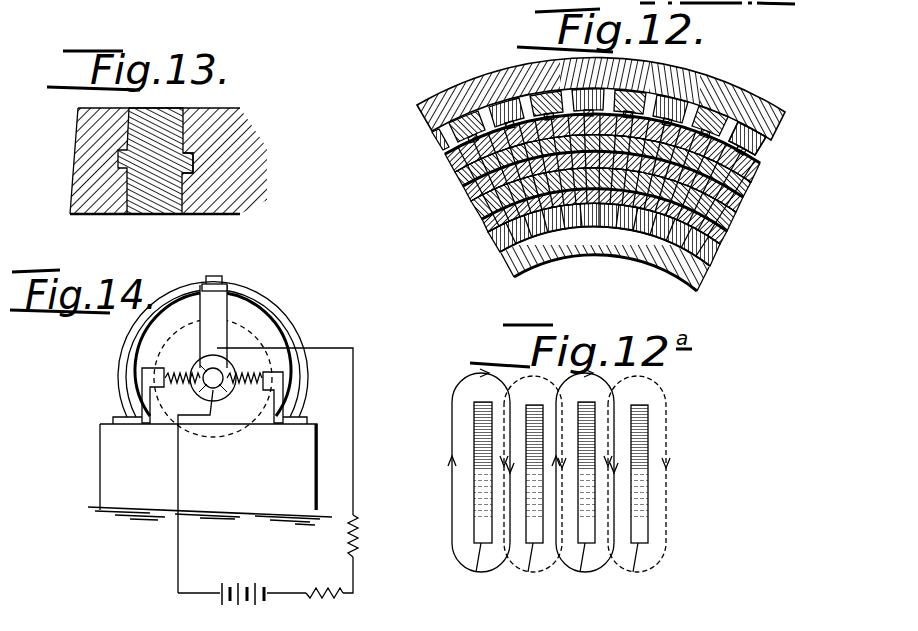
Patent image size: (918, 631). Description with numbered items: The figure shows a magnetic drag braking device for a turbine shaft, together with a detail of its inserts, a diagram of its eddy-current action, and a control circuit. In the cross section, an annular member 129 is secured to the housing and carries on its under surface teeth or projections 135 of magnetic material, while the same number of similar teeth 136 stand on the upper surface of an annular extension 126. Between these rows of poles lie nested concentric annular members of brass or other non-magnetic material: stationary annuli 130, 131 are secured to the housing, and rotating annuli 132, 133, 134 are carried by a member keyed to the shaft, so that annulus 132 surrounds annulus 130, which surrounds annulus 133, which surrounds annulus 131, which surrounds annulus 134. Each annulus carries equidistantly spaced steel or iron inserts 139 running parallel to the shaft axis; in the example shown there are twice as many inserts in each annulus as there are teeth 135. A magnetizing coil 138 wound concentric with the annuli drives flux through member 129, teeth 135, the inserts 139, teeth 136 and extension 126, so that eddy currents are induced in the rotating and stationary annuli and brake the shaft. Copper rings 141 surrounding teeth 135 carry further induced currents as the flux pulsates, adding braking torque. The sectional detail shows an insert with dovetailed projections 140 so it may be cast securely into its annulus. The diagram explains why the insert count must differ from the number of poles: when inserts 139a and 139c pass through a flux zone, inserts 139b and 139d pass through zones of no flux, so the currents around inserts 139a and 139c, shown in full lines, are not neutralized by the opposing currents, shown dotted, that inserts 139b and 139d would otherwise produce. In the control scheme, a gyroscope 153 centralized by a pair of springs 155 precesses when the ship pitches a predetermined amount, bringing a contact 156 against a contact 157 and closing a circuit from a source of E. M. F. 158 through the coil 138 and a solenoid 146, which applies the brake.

In FIG. 12, the annular extension 126 is at (530, 270).
In FIG. 12, the annular member 129 is at (479, 86).
In FIG. 12, the concentric annular member 130 is at (463, 184).
In FIG. 13, the concentric annular member 130 is at (157, 161).
In FIG. 12, the concentric annular member 131 is at (480, 219).
In FIG. 12, the annular member 132 is at (455, 160).
In FIG. 12, the annular member 133 is at (470, 200).
In FIG. 12, the annular member 134 is at (490, 229).
In FIG. 12, the teeth or projections 135 is at (748, 156).
In FIG. 12, the teeth 136 is at (494, 247).
In FIG. 12, the steel or iron inserts 139 is at (726, 226).
In FIG. 13, the steel or iron inserts 139 is at (157, 214).
In FIG. 12A, the insert 139a is at (502, 595).
In FIG. 12A, the insert 139b is at (562, 595).
In FIG. 12A, the insert 139c is at (616, 595).
In FIG. 12A, the insert 139d is at (677, 595).
In FIG. 13, the dovetailed projections 140 is at (185, 172).
In FIG. 12, the copper rings 141 is at (447, 138).
In FIG. 14, the gyroscope 153 is at (253, 327).
In FIG. 14, the springs 155 is at (170, 376).
In FIG. 14, the contact 156 is at (223, 393).
In FIG. 14, the contact 157 is at (200, 391).
In FIG. 14, the magnetizing coil 138 is at (372, 536).
In FIG. 14, the solenoid 146 is at (329, 609).
In FIG. 14, the source of E. M. F. 158 is at (243, 607).